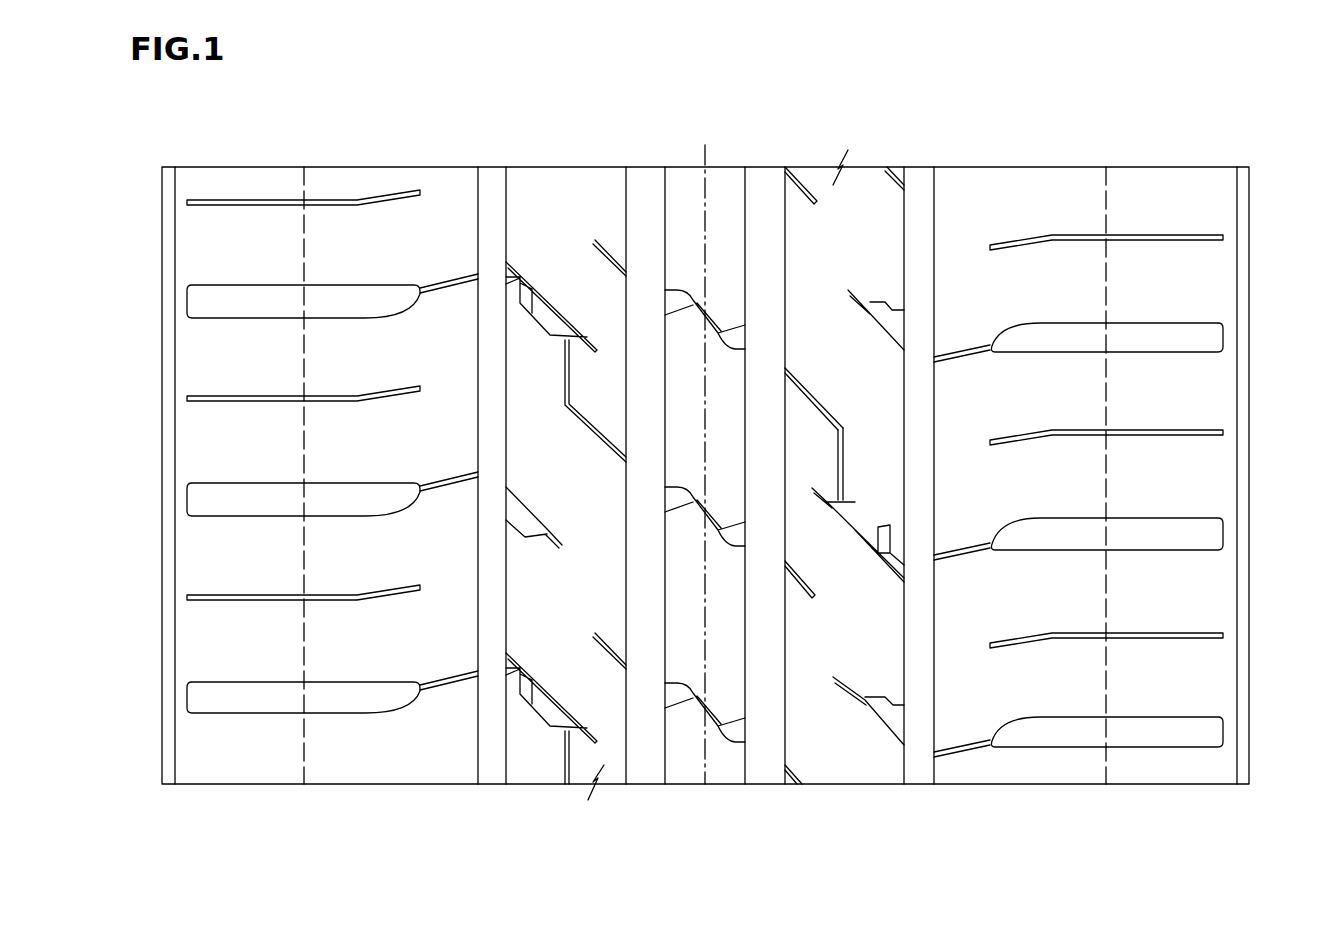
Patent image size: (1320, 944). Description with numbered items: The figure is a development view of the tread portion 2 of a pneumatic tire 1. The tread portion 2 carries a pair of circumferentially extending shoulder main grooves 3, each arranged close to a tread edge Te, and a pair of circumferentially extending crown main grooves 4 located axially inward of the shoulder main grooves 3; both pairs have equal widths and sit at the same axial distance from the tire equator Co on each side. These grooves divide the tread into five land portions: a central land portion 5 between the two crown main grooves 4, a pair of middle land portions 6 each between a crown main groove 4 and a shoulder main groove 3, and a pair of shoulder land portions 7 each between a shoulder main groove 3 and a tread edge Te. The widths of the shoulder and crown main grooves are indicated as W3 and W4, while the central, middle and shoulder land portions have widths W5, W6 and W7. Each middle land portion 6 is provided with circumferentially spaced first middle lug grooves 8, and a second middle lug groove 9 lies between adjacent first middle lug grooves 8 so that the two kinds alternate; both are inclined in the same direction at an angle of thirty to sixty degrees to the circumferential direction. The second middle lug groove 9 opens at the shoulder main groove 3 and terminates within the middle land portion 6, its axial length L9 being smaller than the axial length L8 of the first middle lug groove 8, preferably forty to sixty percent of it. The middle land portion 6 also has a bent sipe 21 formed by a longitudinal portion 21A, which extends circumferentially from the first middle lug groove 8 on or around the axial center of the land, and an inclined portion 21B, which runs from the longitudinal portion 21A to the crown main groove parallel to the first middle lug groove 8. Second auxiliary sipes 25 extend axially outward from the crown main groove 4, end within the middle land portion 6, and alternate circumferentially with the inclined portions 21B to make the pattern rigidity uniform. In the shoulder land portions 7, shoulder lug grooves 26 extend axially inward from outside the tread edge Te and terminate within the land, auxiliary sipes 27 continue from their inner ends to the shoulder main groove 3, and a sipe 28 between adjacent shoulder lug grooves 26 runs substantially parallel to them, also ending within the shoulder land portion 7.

The pneumatic tire 1 is at (1206, 160).
The tread portion 2 is at (1248, 160).
The shoulder main groove 3 is at (492, 200).
The crown main groove 4 is at (648, 200).
The central land portion 5 is at (745, 790).
The middle land portion 6 is at (749, 536).
The shoulder land portion 7 is at (332, 511).
The first middle lug groove 8 is at (548, 308).
The second middle lug groove 9 is at (525, 520).
The bent sipe 21 is at (923, 430).
The longitudinal portion 21A is at (846, 455).
The inclined portion 21B is at (822, 400).
The second auxiliary sipe 25 is at (795, 580).
The shoulder lug groove 26 is at (348, 698).
The auxiliary sipe 27 is at (446, 678).
The sipe 28 is at (338, 596).
The tread edge Te is at (304, 188).
The tire equator Co is at (702, 451).
The width of shoulder main groove W3 is at (506, 784).
The width of crown main groove W4 is at (665, 784).
The width of central land portion W5 is at (745, 784).
The width of middle land portion W6 is at (626, 784).
The width of shoulder land portion W7 is at (478, 784).
The axial length of first middle lug groove L8 is at (826, 500).
The axial length of second middle lug groove L9 is at (862, 705).